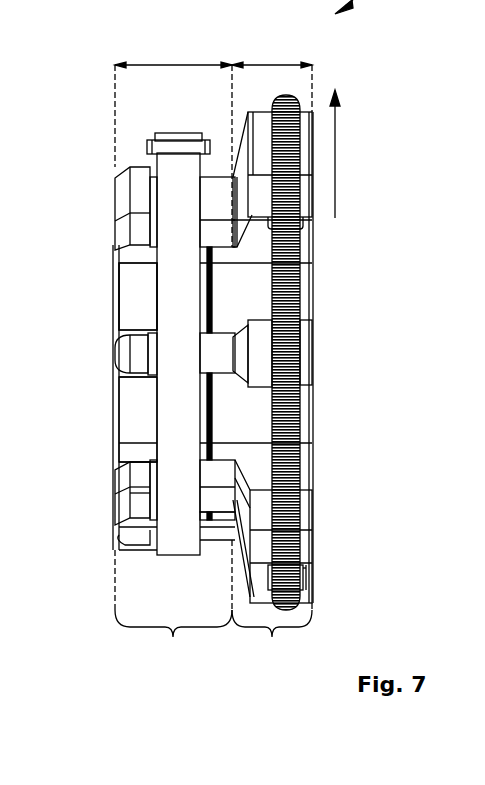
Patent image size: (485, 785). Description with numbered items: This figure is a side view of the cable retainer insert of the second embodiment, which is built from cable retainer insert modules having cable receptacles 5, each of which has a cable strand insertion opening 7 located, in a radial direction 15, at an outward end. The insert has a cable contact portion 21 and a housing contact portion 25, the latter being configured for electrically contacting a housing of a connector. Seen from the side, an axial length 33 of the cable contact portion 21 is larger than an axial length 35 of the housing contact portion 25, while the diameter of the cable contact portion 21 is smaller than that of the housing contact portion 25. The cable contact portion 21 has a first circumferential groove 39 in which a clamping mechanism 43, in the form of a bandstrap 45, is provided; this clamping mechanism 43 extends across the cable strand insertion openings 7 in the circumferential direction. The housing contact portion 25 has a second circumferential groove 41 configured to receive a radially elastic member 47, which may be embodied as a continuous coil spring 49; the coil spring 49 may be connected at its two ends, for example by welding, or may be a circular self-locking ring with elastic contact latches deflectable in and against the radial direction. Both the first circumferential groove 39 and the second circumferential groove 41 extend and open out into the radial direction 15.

The cable receptacle 5 is at (140, 276).
The cable strand insertion opening 7 is at (147, 301).
The radial direction 15 is at (338, 156).
The cable contact portion 21 is at (173, 641).
The housing contact portion 25 is at (272, 641).
The axial length of the cable contact portion 33 is at (172, 62).
The axial length of the housing contact portion 35 is at (272, 62).
The first circumferential groove 39 is at (219, 163).
The second circumferential groove 41 is at (305, 577).
The clamping mechanism 43 is at (114, 344).
The bandstrap 45 is at (165, 392).
The radially elastic member 47 is at (328, 352).
The coil spring 49 is at (305, 270).